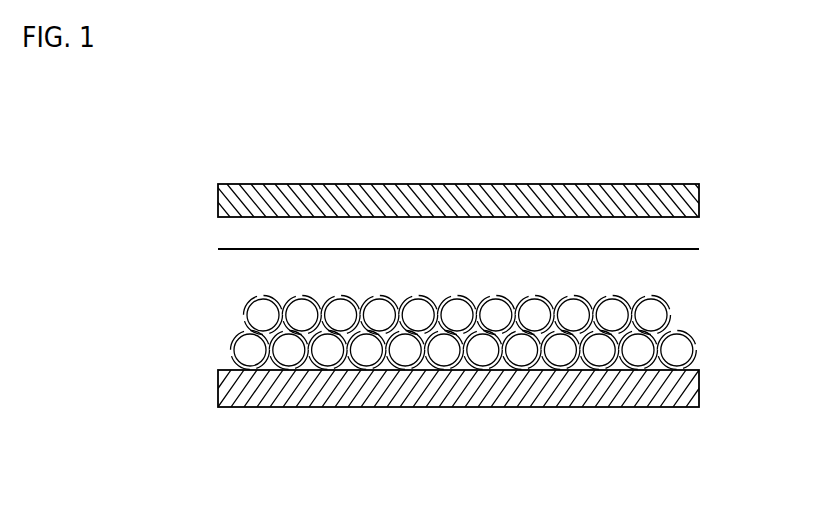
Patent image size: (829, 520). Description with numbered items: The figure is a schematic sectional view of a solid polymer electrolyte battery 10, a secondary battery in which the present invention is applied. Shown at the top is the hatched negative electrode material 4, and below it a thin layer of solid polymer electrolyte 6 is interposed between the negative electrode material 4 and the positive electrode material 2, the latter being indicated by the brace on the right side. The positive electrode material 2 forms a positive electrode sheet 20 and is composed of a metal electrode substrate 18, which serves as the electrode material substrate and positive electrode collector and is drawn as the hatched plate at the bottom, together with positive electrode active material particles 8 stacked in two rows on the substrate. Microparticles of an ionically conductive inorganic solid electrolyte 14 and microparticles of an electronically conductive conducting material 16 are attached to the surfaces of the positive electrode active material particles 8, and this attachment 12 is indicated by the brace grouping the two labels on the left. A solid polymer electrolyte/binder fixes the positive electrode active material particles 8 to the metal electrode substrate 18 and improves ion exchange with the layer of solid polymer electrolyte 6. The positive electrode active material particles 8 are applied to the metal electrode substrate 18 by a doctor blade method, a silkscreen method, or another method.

The solid polymer electrolyte battery 10 is at (131, 104).
The positive electrode sheet 20 is at (176, 234).
The negative electrode material 4 is at (351, 192).
The solid polymer electrolyte 6 is at (677, 262).
The positive electrode material 2 is at (761, 248).
The positive electrode active material particles 8 is at (655, 315).
The attachment 12 is at (165, 300).
The inorganic solid electrolyte 14 is at (243, 313).
The conducting material 16 is at (235, 337).
The positive electrode collector (metal electrode substrate) 18 is at (430, 393).